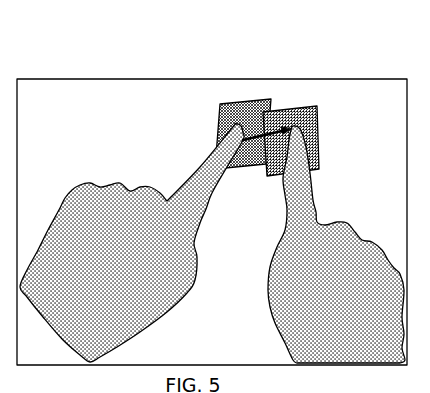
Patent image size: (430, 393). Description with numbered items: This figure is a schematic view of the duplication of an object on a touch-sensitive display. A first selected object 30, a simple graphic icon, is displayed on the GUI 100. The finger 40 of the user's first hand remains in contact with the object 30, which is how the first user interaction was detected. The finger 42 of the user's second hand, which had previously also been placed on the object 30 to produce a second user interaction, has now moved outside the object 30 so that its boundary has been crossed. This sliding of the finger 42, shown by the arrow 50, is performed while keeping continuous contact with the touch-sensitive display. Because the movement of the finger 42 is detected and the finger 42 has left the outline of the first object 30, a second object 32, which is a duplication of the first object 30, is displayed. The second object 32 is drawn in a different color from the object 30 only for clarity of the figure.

The GUI 100 is at (227, 344).
The first selected object 30 is at (235, 112).
The second object 32 is at (292, 115).
The finger 40 is at (205, 160).
The finger 42 is at (307, 190).
The arrow 50 is at (268, 173).